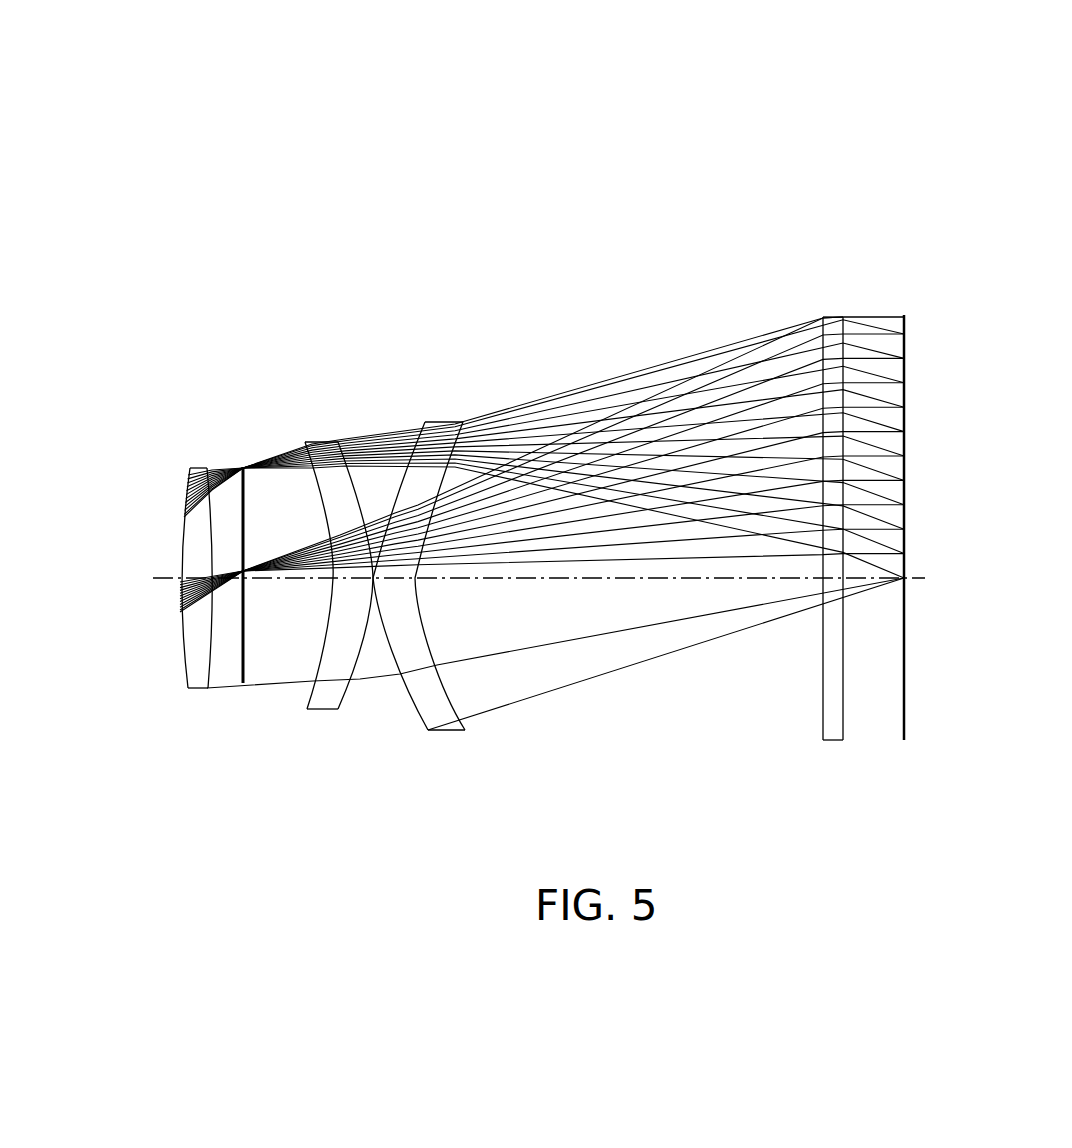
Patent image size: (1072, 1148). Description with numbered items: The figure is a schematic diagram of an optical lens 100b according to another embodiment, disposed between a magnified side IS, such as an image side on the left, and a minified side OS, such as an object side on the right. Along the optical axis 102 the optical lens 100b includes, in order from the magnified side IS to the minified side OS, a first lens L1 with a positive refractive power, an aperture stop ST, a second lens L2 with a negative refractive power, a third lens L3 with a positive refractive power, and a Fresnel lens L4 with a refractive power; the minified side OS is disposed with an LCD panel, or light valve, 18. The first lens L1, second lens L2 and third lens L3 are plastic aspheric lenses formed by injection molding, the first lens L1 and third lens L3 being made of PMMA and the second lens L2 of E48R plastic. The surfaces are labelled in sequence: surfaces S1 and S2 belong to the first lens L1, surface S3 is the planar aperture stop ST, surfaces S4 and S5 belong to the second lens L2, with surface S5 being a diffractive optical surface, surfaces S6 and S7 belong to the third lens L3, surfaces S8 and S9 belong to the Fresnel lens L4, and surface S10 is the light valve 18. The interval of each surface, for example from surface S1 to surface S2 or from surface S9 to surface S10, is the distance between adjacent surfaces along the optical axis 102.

The optical lens 100b is at (98, 100).
The magnified side IS is at (161, 226).
The minified side OS is at (1018, 226).
The optical axis 102 is at (908, 578).
The first lens L1 is at (196, 542).
The second lens L2 is at (333, 549).
The third lens L3 is at (438, 545).
The Fresnel lens L4 is at (826, 493).
The aperture stop ST is at (257, 579).
The LCD panel (light valve) 18 is at (939, 528).
The surface S1 is at (183, 663).
The surface S2 is at (211, 662).
The surface S3 is at (245, 662).
The surface S4 is at (310, 655).
The surface S5 is at (359, 660).
The surface S6 is at (401, 676).
The surface S7 is at (452, 682).
The surface S8 is at (823, 693).
The surface S9 is at (843, 688).
The surface S10 is at (904, 688).